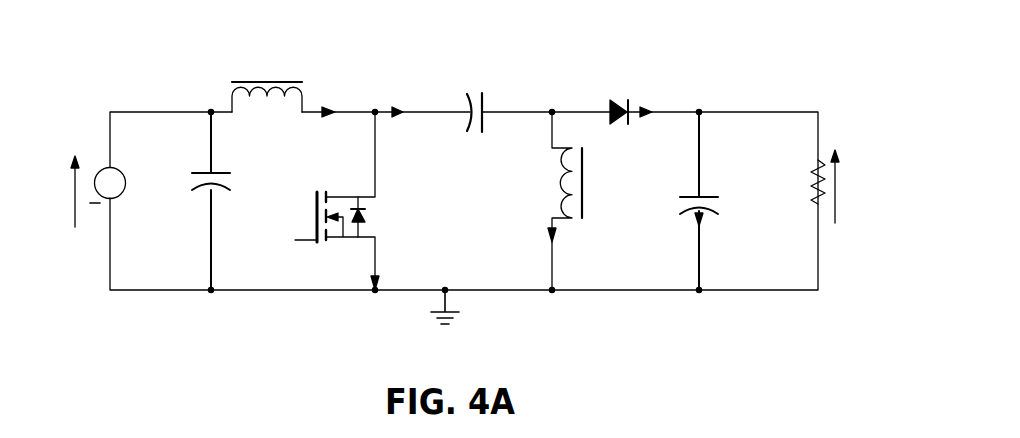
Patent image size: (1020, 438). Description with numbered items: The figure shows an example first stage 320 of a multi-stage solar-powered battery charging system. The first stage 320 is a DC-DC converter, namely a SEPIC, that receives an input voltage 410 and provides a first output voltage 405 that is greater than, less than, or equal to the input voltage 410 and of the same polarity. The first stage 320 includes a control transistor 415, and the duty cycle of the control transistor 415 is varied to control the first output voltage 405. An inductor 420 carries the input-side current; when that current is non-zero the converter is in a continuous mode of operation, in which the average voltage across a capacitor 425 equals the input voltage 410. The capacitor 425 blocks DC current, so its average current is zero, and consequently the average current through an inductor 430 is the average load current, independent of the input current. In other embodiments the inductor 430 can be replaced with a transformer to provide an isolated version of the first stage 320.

The first stage 320 is at (800, 33).
The input voltage 410 is at (74, 215).
The inductor 420 is at (250, 80).
The control transistor 415 is at (314, 222).
The capacitor 425 is at (486, 102).
The inductor 430 is at (584, 200).
The first output voltage 405 is at (836, 215).